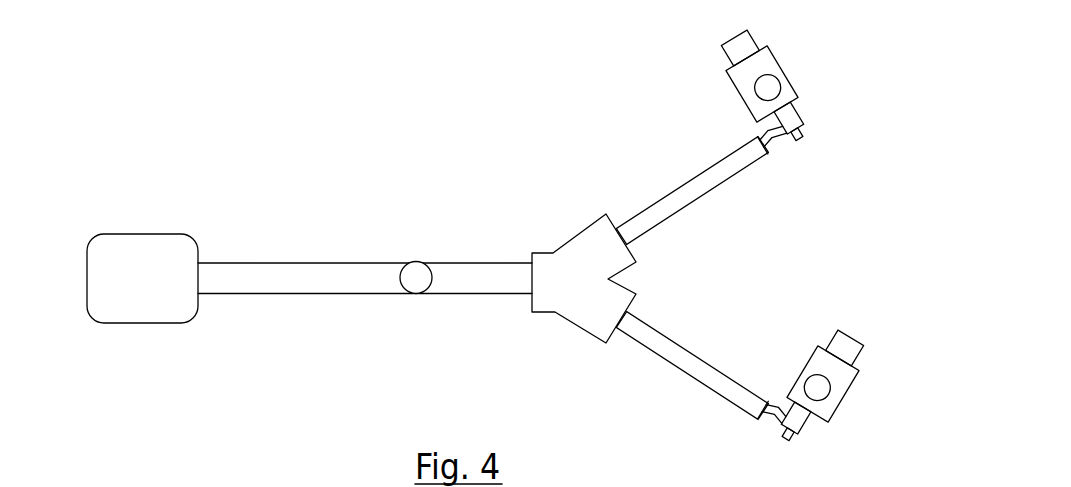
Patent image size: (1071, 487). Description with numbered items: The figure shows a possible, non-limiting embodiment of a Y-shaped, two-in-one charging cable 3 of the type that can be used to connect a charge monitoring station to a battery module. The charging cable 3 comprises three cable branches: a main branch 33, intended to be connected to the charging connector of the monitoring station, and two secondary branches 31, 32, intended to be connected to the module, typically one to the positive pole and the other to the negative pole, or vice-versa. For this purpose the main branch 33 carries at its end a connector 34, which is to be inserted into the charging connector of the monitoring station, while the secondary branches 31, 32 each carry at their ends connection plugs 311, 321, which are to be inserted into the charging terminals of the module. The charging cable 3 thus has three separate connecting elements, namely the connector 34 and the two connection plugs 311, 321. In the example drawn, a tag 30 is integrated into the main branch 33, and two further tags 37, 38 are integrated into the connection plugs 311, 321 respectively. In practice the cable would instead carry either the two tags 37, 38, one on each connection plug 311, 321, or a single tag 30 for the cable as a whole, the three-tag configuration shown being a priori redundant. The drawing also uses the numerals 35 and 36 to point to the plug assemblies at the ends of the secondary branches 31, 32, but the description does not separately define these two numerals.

The charging cable 3 is at (235, 236).
The tag 30 is at (417, 278).
The secondary branch 31 is at (683, 202).
The secondary branch 32 is at (683, 355).
The main branch 33 is at (337, 278).
The connector 34 is at (132, 278).
The first connector assembly 35 is at (844, 150).
The second connector 36 is at (846, 350).
The tag 37 is at (770, 90).
The tag 38 is at (820, 388).
The connection plug 311 is at (788, 101).
The connection plug 321 is at (797, 392).